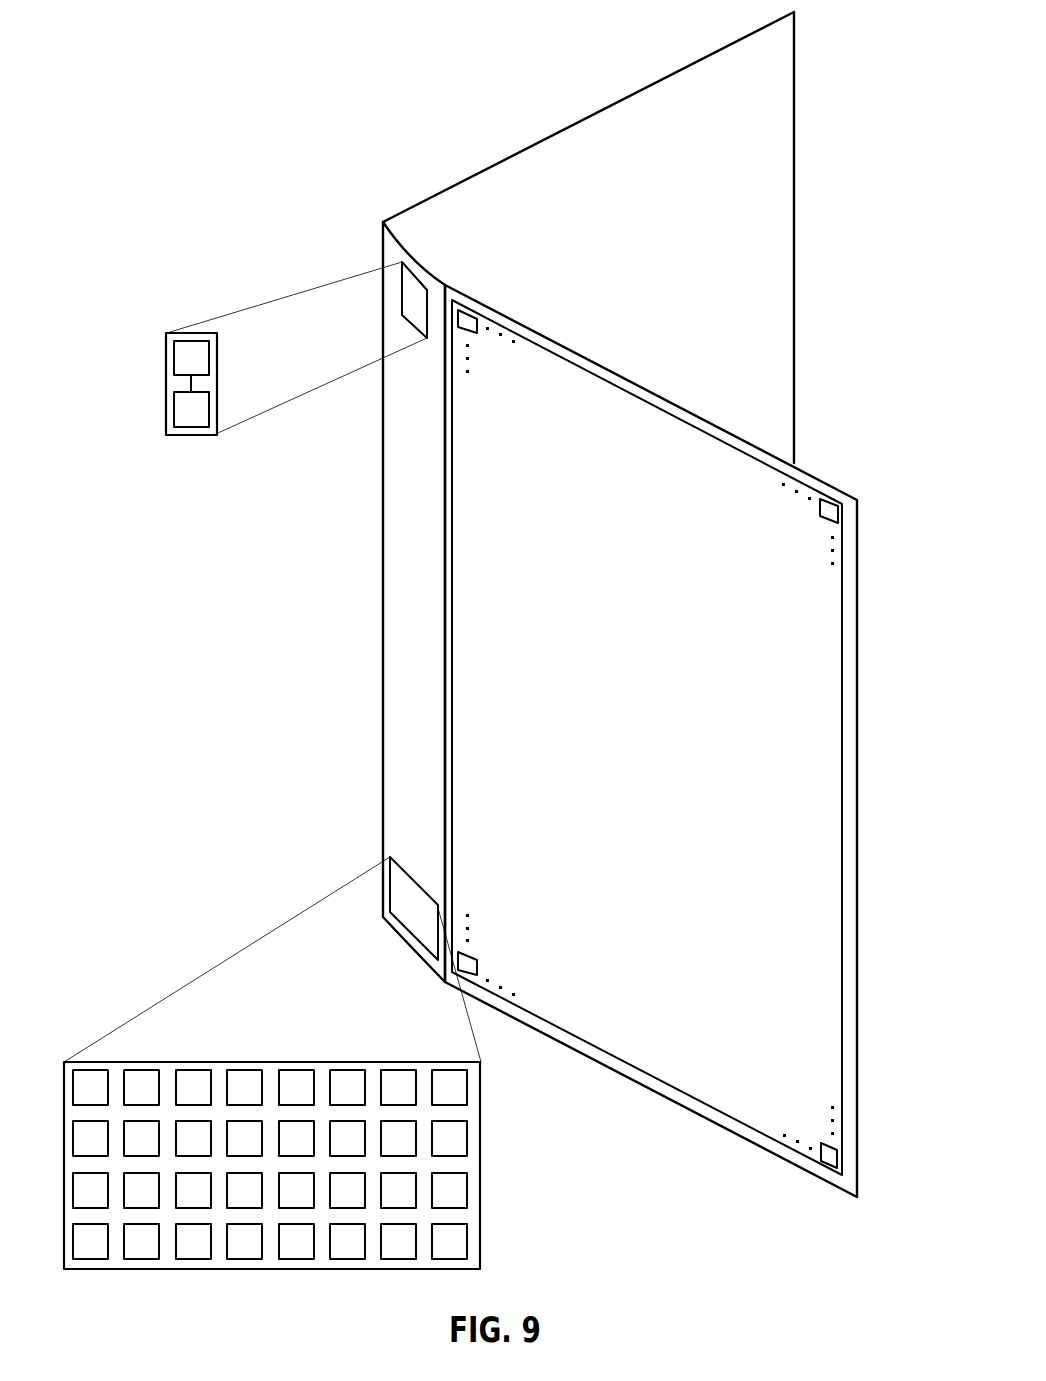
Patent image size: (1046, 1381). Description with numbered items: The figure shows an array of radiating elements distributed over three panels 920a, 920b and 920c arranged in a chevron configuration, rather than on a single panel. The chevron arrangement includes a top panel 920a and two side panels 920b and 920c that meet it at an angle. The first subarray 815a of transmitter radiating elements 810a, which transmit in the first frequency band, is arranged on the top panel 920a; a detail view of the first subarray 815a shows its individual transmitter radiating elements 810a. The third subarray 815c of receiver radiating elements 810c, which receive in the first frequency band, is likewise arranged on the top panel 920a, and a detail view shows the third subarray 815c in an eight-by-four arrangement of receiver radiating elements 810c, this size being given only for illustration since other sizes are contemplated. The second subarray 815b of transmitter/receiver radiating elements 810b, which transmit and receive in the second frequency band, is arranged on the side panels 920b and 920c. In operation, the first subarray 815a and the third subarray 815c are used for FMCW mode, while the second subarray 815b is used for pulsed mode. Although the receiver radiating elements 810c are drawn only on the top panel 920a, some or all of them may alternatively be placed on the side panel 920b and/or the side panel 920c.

The top panel 920a is at (385, 247).
The side panel 920b is at (578, 118).
The side panel 920c is at (820, 480).
The first subarray 815a is at (166, 362).
The transmitter radiating elements 810a is at (182, 412).
The second subarray 815b is at (745, 1123).
The transmitter/receiver radiating elements 810b is at (825, 1158).
The third subarray 815c is at (408, 892).
The receiver radiating elements 810c is at (293, 1250).